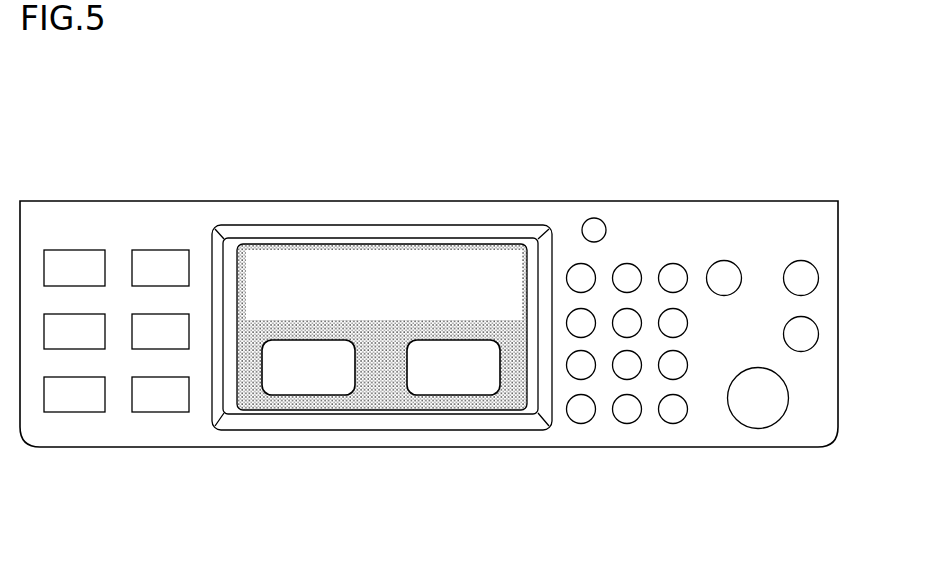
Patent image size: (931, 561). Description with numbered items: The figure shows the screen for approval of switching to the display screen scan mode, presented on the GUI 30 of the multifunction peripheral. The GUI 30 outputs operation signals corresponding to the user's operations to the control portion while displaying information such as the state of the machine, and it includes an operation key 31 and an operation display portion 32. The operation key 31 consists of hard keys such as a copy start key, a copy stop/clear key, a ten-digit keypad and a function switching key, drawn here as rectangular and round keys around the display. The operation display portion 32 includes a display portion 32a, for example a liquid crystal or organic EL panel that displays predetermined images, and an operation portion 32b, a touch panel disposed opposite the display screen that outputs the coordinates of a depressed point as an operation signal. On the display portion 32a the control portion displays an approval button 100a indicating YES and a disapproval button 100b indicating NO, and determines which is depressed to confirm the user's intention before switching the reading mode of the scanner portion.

The GUI 30 is at (753, 218).
The operation key 31 is at (649, 425).
The operation display portion 32 is at (270, 238).
The display portion 32a is at (415, 240).
The operation portion 32b is at (455, 241).
The approval button 100a is at (308, 396).
The disapproval button 100b is at (458, 396).